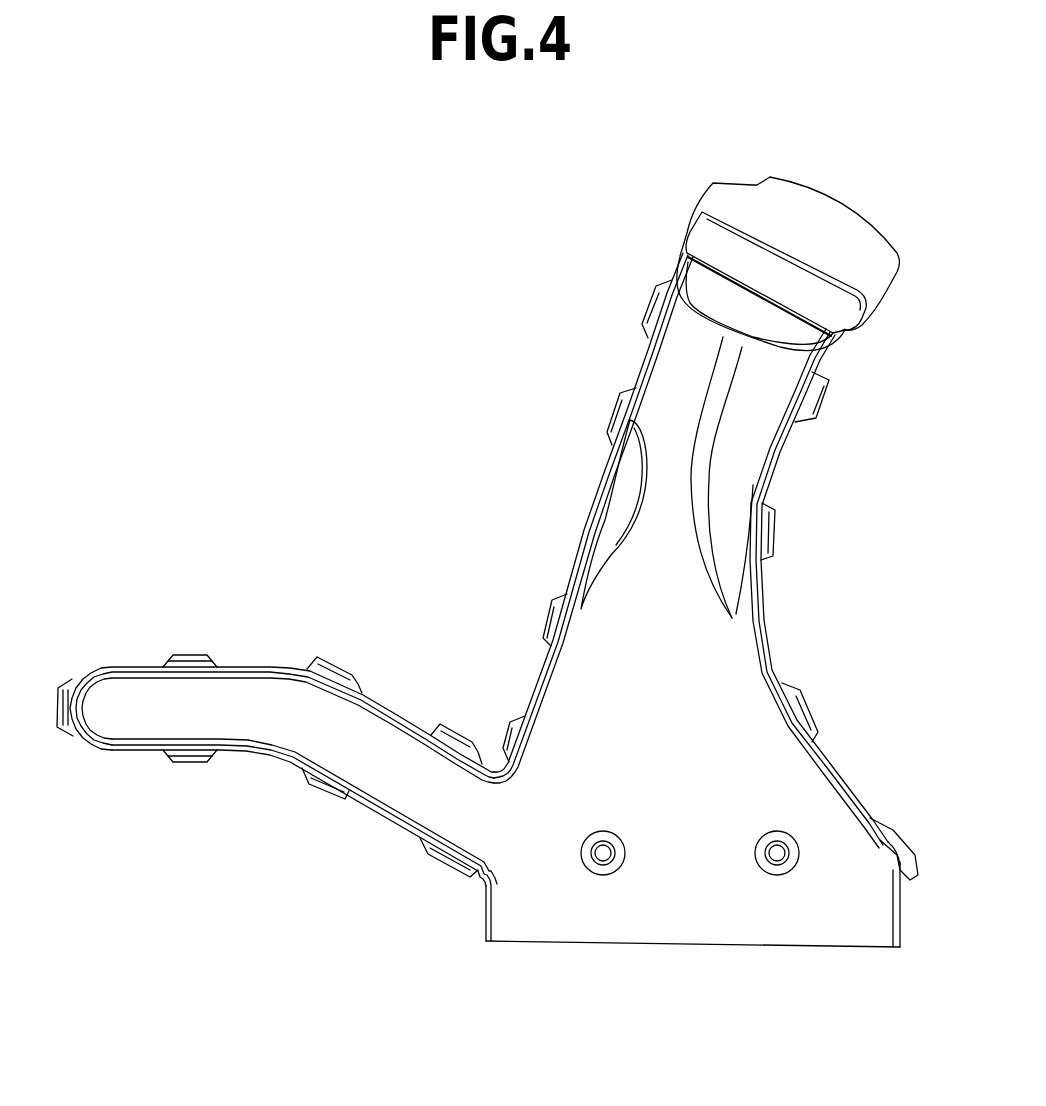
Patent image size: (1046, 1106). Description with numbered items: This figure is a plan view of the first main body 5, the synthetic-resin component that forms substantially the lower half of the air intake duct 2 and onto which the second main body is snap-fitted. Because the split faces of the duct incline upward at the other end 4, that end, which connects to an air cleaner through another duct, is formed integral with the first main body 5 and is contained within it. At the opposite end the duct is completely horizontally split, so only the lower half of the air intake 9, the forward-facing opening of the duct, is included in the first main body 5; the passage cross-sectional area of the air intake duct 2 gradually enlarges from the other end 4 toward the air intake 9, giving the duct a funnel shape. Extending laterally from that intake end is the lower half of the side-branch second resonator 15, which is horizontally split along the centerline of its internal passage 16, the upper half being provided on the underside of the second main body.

The air intake duct 2 is at (730, 684).
The other end of air intake duct 4 is at (828, 231).
The first main body 5 is at (528, 445).
The air intake 9 is at (548, 944).
The second resonator 15 is at (271, 752).
The internal passage 16 is at (277, 697).